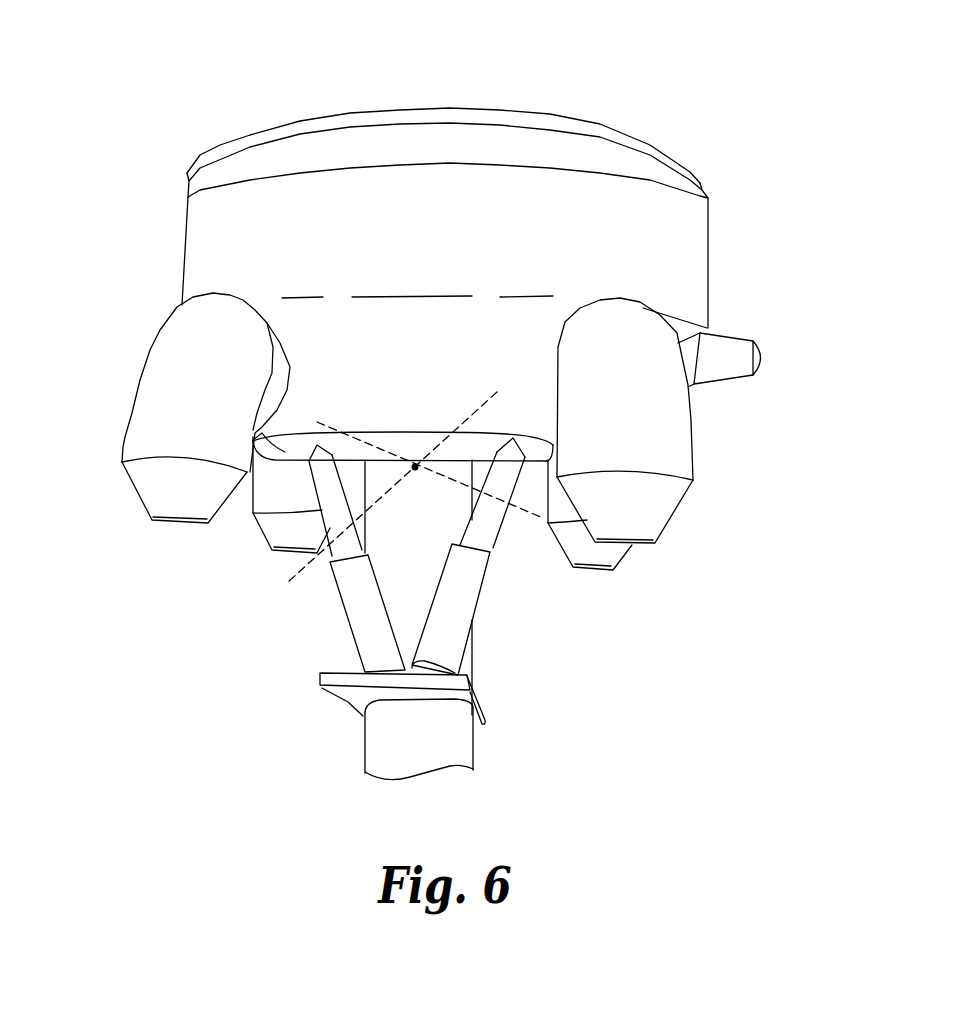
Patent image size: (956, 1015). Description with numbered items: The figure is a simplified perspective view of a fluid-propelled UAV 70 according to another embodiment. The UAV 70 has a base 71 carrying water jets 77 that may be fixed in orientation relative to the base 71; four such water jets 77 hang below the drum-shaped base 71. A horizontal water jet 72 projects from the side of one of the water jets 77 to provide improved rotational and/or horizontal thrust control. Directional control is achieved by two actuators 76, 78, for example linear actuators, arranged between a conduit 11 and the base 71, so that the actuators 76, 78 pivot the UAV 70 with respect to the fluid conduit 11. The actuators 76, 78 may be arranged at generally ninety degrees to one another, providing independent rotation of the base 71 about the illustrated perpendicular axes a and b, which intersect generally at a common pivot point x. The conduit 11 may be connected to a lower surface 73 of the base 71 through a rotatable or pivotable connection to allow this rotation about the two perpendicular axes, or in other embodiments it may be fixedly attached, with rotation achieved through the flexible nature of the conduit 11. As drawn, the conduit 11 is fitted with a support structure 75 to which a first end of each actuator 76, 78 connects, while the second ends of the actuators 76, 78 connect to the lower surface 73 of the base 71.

The UAV 70 is at (548, 82).
The base 71 is at (697, 255).
The horizontal water jet 72 is at (732, 343).
The lower surface 73 is at (400, 445).
The support structure 75 is at (477, 693).
The actuator 76 is at (473, 582).
The water jet 77 is at (150, 497).
The actuator 78 is at (348, 588).
The conduit 11 is at (462, 762).